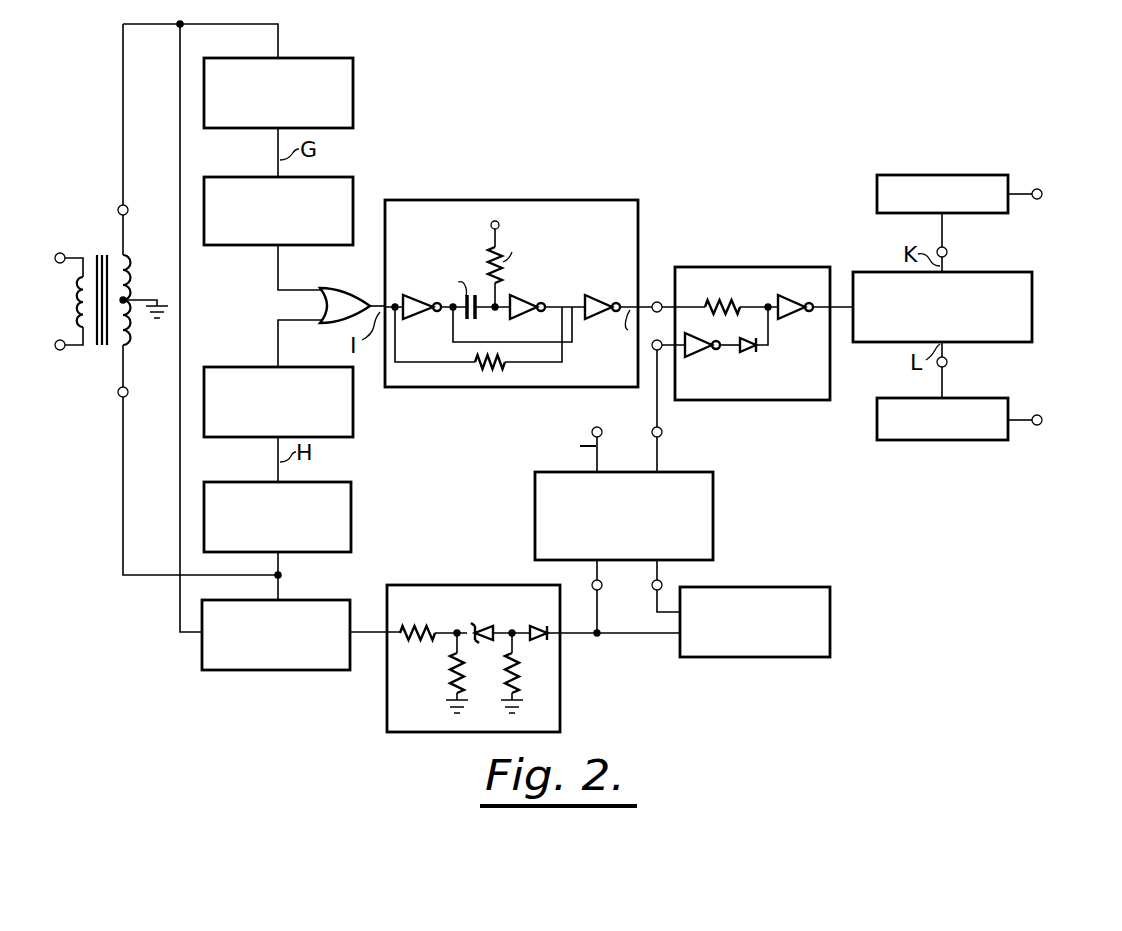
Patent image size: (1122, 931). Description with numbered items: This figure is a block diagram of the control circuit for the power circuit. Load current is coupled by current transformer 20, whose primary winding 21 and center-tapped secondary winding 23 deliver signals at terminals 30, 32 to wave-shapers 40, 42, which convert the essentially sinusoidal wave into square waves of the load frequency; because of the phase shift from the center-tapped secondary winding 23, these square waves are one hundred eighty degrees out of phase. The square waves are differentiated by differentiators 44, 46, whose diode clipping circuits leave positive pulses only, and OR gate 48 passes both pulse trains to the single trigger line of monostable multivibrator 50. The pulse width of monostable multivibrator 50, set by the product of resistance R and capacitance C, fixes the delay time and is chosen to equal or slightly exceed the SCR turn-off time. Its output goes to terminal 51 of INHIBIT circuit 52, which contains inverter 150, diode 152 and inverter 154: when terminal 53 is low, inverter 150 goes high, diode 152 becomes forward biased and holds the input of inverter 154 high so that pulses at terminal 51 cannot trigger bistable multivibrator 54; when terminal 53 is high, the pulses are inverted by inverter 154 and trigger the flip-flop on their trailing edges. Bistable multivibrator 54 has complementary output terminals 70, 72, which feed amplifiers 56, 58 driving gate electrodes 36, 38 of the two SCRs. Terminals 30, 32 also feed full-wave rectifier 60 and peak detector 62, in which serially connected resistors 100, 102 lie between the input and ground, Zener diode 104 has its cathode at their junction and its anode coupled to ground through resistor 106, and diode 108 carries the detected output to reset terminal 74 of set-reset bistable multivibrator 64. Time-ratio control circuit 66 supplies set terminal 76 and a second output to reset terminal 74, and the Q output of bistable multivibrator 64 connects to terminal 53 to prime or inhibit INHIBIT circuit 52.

The current transformer 20 is at (114, 378).
The transformer primary winding 21 is at (82, 301).
The center-tapped secondary winding 23 is at (129, 292).
The transformer terminal 30 is at (118, 211).
The transformer terminal 32 is at (118, 396).
The gate electrode 36 is at (1050, 185).
The gate electrode 38 is at (1050, 411).
The wave-shaper 40 is at (355, 90).
The wave-shaper 42 is at (352, 520).
The differentiator 44 is at (355, 203).
The differentiator 46 is at (243, 366).
The OR gate 48 is at (345, 288).
The monostable multivibrator 50 is at (520, 195).
The input terminal of INHIBIT circuit 51 is at (655, 302).
The INHIBIT circuit 52 is at (764, 318).
The input terminal of INHIBIT circuit 53 is at (653, 352).
The bistable multivibrator 54 is at (1032, 305).
The amplifier 56 is at (942, 175).
The amplifier 58 is at (942, 440).
The full-wave rectifier 60 is at (278, 670).
The peak detector 62 is at (533, 642).
The bistable multivibrator 64 is at (713, 535).
The time-ratio control circuit 66 is at (850, 612).
The output terminal 70 is at (947, 249).
The output terminal 72 is at (947, 364).
The reset terminal 74 is at (602, 585).
The set terminal 76 is at (655, 592).
The resistor 100 is at (432, 624).
The resistor 102 is at (451, 675).
The Zener diode 104 is at (490, 624).
The resistor 106 is at (520, 668).
The diode 108 is at (520, 605).
The inverter 150 is at (688, 360).
The diode 152 is at (748, 355).
The inverter 154 is at (786, 322).